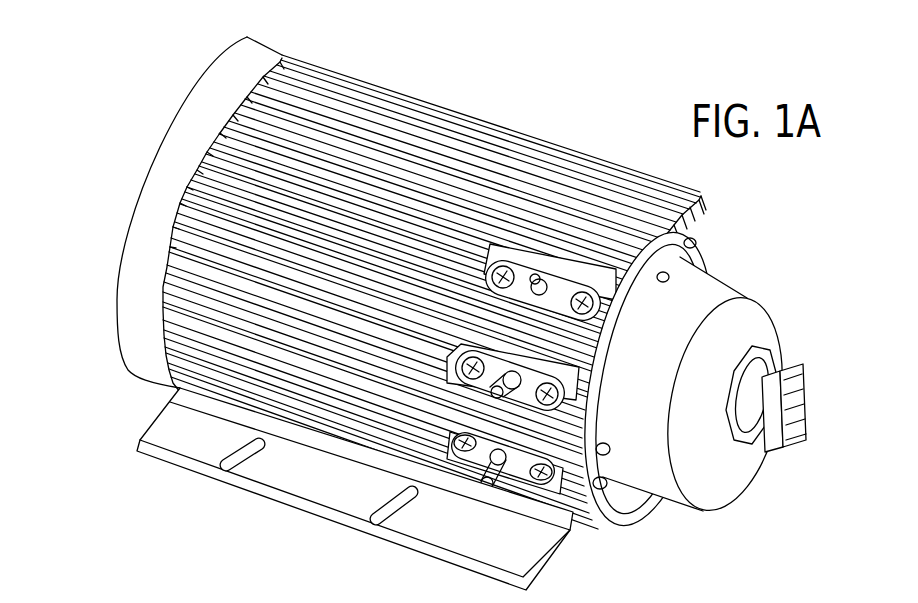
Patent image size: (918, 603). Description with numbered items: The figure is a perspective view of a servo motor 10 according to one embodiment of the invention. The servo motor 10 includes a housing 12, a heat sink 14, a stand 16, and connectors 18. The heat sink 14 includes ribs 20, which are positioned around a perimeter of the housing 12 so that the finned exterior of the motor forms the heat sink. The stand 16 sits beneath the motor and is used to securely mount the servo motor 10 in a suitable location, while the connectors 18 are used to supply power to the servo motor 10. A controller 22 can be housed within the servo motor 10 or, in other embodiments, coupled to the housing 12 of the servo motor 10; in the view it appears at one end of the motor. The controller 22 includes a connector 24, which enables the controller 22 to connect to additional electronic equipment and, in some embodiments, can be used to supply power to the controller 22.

The servo motor 10 is at (143, 63).
The housing 12 is at (226, 74).
The heat sink 14 is at (553, 115).
The stand 16 is at (310, 481).
The connectors 18 is at (582, 303).
The ribs 20 is at (689, 208).
The controller 22 is at (722, 280).
The connector 24 is at (772, 409).